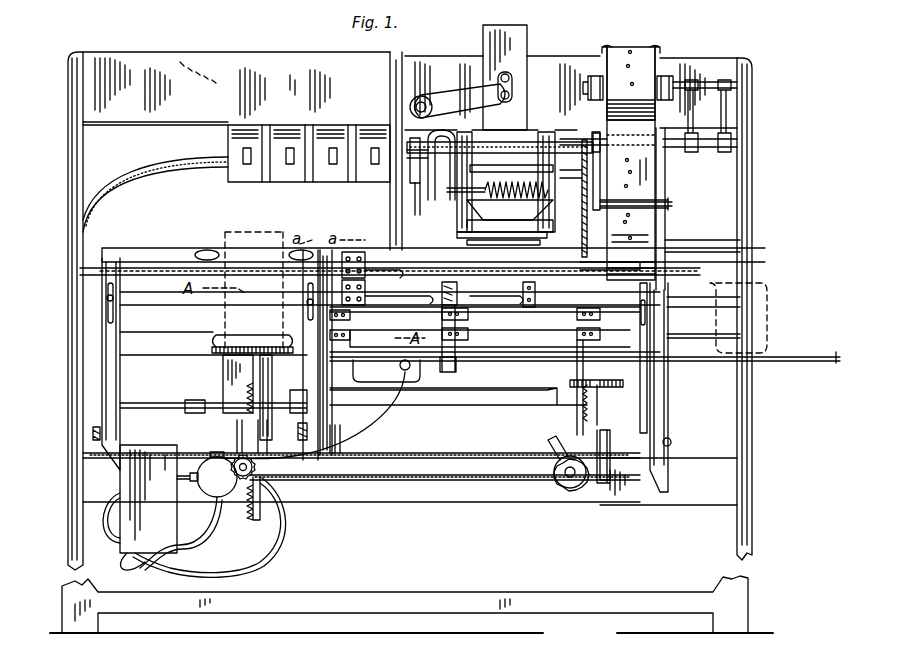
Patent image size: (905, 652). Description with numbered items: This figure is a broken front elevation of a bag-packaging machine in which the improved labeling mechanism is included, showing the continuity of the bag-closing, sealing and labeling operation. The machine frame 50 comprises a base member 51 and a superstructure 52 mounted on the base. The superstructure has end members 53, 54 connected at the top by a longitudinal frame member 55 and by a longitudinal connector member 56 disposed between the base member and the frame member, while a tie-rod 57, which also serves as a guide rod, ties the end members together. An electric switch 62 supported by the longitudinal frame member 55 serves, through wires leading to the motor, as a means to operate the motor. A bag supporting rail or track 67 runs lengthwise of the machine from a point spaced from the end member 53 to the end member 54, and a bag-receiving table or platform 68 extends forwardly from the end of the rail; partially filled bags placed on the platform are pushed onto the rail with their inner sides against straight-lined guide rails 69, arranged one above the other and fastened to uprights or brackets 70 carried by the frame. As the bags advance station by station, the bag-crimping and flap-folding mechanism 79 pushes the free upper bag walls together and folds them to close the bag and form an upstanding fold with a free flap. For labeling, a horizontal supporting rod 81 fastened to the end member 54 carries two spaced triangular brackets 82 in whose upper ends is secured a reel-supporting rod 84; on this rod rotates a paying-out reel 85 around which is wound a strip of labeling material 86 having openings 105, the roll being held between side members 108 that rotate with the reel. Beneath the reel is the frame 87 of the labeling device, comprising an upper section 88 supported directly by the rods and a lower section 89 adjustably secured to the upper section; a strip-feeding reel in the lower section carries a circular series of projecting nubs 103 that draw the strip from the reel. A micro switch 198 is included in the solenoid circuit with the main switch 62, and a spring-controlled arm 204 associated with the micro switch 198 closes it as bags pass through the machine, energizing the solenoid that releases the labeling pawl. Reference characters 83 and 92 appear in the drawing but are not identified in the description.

The frame 50 is at (278, 63).
The base member 51 is at (406, 598).
The superstructure 52 is at (155, 122).
The end member 53 is at (84, 178).
The end member 54 is at (749, 203).
The longitudinal frame member 55 is at (192, 64).
The longitudinal connector member 56 is at (172, 340).
The tie-rod 57 is at (166, 270).
The electric switch 62 is at (252, 176).
The supporting rail or track 67 is at (471, 362).
The bag-receiving table or platform 68 is at (245, 345).
The guide rails 69 is at (417, 258).
The uprights or brackets 70 is at (351, 322).
The bag-crimping and flap-folding mechanism 79 is at (497, 148).
The supporting rod 81 is at (706, 150).
The triangular brackets or frame members 82 is at (721, 114).
The upright post 83 is at (390, 182).
The reel-supporting rod 84 is at (705, 82).
The reel 85 is at (596, 96).
The strip of material 86 is at (582, 175).
The frame of labeling mechanism 87 is at (678, 206).
The upper frame section 88 is at (665, 181).
The lower frame section 89 is at (670, 245).
The side panel 92 is at (633, 186).
The projecting nubs 103 is at (625, 232).
The openings 105 is at (631, 83).
The side members 108 is at (596, 76).
The micro switch 198 is at (457, 304).
The spring arm 204 is at (518, 284).